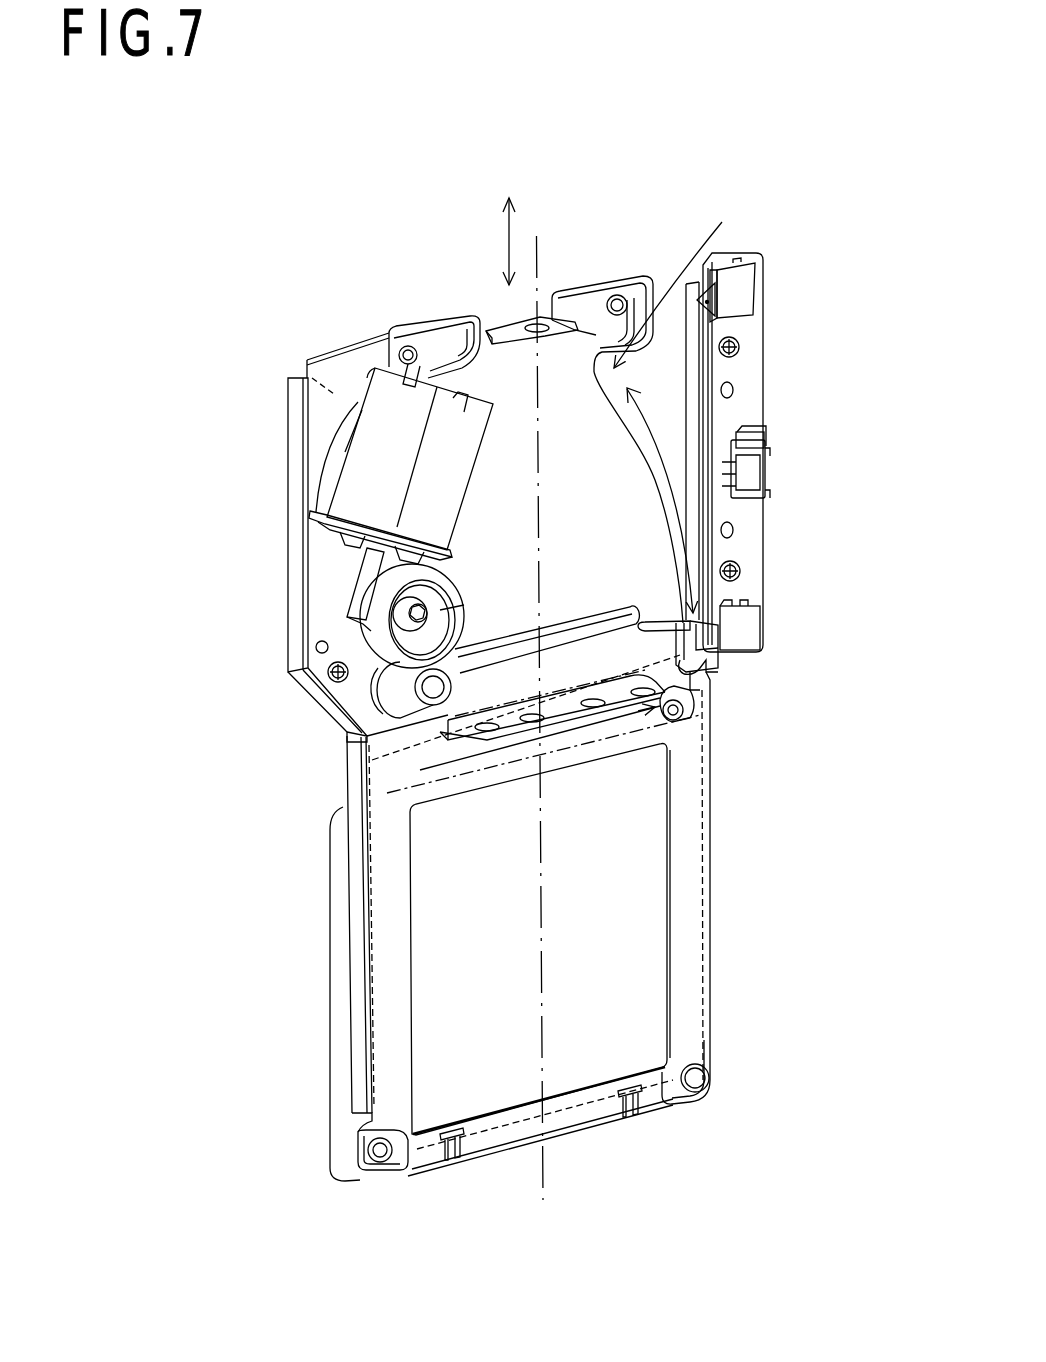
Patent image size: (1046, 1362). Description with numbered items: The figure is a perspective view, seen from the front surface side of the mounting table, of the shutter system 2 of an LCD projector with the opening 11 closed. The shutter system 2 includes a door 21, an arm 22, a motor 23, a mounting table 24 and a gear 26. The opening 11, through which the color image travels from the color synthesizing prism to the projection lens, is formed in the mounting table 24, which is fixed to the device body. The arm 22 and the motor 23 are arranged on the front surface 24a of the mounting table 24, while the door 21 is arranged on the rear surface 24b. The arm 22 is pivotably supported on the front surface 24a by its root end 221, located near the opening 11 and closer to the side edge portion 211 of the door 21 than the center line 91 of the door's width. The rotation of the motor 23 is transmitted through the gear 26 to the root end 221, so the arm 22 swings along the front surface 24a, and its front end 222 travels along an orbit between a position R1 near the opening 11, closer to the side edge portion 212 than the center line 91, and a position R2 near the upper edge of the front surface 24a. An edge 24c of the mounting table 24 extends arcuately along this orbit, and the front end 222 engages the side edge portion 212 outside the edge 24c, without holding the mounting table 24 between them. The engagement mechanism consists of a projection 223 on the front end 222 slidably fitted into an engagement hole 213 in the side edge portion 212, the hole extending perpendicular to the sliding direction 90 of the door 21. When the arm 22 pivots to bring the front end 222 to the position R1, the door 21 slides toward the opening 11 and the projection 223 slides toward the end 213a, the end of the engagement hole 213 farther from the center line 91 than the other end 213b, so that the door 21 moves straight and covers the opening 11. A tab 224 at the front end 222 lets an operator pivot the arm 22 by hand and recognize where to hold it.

The shutter system 2 is at (779, 292).
The opening 11 is at (323, 988).
The door 21 is at (580, 902).
The arm 22 is at (576, 660).
The motor 23 is at (387, 398).
The mounting table 24 is at (332, 557).
The front surface 24a is at (601, 488).
The rear surface 24b is at (303, 362).
The edge 24c is at (645, 455).
The gear 26 is at (352, 598).
The sliding direction 90 is at (505, 238).
The center line 91 is at (540, 257).
The side edge portion 211 is at (364, 852).
The side edge portion 212 is at (712, 787).
The engagement hole 213 is at (612, 728).
The end 213a is at (703, 724).
The end 213b is at (590, 733).
The root end 221 is at (382, 716).
The front end 222 is at (722, 670).
The projection 223 is at (658, 727).
The tab 224 is at (655, 622).
The position R1 is at (715, 691).
The position R2 is at (683, 280).